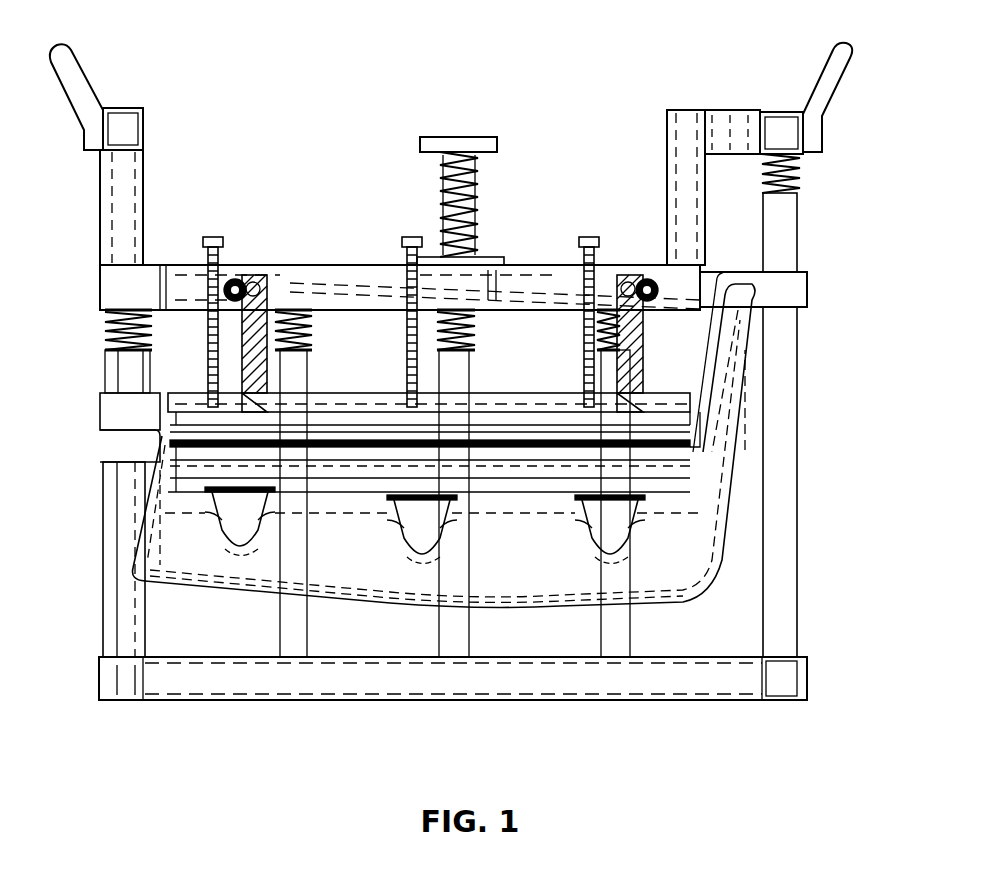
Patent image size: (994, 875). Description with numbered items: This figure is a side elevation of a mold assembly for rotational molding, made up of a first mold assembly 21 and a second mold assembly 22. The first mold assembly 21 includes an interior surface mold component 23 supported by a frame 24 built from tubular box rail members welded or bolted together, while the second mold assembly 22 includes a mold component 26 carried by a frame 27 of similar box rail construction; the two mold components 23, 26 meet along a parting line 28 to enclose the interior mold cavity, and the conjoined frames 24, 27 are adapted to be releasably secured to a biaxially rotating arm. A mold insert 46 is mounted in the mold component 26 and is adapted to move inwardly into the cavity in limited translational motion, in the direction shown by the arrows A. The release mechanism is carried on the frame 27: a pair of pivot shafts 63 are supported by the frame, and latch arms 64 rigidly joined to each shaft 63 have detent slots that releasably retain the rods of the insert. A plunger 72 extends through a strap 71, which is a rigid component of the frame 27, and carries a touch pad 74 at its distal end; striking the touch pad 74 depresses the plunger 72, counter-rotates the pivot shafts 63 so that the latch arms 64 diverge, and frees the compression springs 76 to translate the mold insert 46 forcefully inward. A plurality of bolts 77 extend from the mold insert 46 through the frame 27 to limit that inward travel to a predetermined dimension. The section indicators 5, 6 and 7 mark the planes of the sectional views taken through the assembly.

The first mold assembly 21 is at (682, 714).
The second mold assembly 22 is at (617, 108).
The interior surface mold component 23 is at (722, 558).
The frame 24 is at (800, 477).
The mold component 26 is at (130, 437).
The frame 27 is at (143, 167).
The parting line 28 is at (800, 290).
The mold insert 46 is at (700, 444).
The pivot shafts 63 is at (262, 278).
The latch arms 64 is at (240, 327).
The strap 71 is at (497, 252).
The plunger 72 is at (440, 170).
The touch pad 74 is at (458, 137).
The compression springs 76 is at (300, 330).
The bolts 77 is at (403, 240).
The section line 5 is at (232, 393).
The section line 6 is at (425, 393).
The section line 7 is at (587, 362).
The arrows A is at (242, 552).